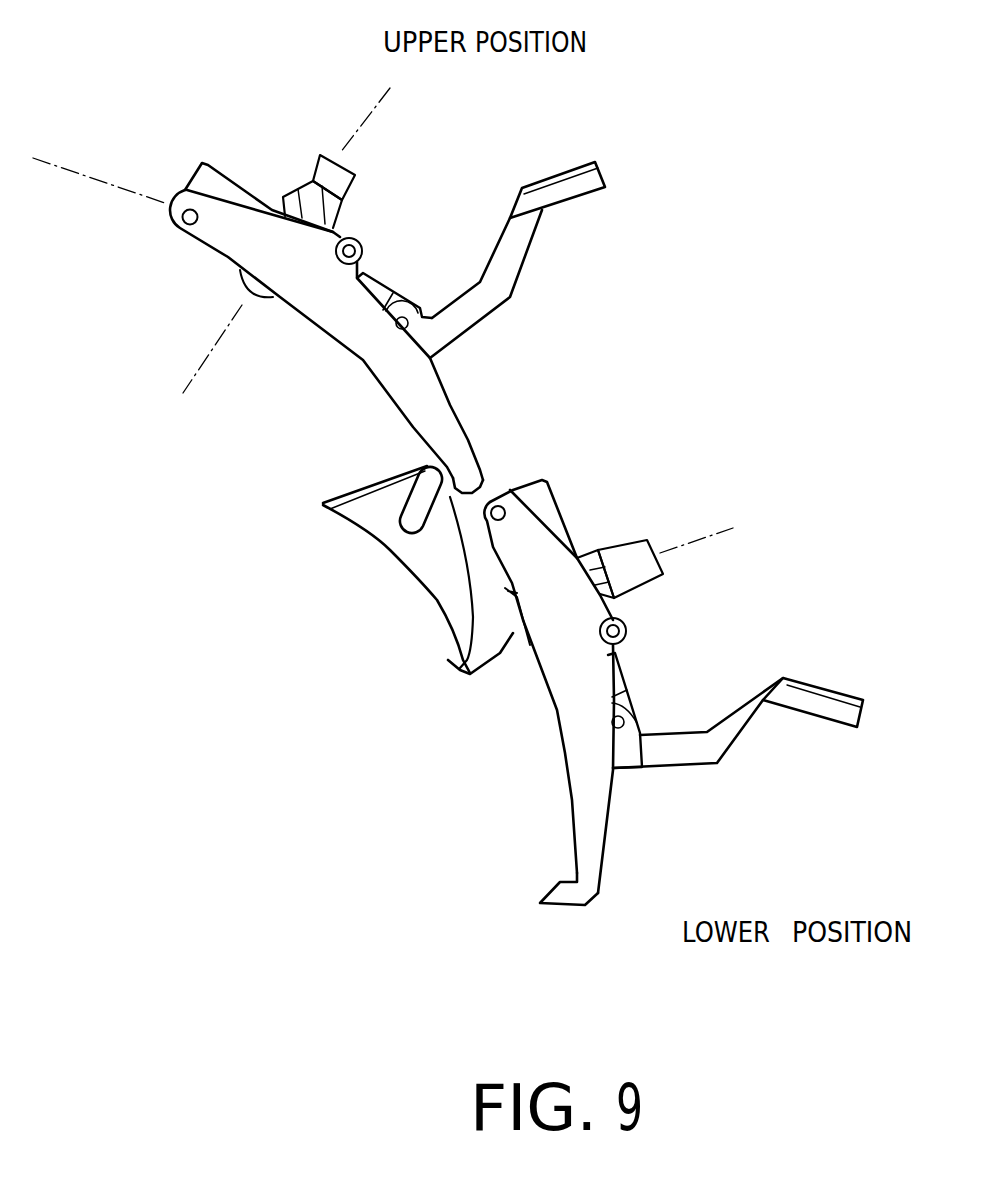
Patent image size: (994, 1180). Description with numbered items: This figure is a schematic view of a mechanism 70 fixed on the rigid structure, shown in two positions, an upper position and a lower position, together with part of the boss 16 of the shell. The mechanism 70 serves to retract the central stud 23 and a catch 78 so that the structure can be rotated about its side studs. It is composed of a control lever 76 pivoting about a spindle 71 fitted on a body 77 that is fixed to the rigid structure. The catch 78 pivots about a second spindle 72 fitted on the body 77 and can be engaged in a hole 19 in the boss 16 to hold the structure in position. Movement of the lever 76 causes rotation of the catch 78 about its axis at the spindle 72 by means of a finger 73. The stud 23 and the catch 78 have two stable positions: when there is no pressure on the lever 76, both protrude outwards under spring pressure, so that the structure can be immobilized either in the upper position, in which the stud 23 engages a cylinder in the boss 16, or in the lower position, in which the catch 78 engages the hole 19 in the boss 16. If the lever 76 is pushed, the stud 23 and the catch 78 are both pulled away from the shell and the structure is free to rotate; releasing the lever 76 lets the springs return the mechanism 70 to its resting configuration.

The boss 16 is at (465, 655).
The hole 19 is at (405, 530).
The stud 23 is at (257, 307).
The mechanism 70 is at (452, 150).
The spindle 71 is at (403, 320).
The spindle 72 is at (192, 207).
The finger 73 is at (627, 623).
The control lever 76 is at (607, 179).
The body 77 is at (205, 185).
The catch 78 is at (450, 480).